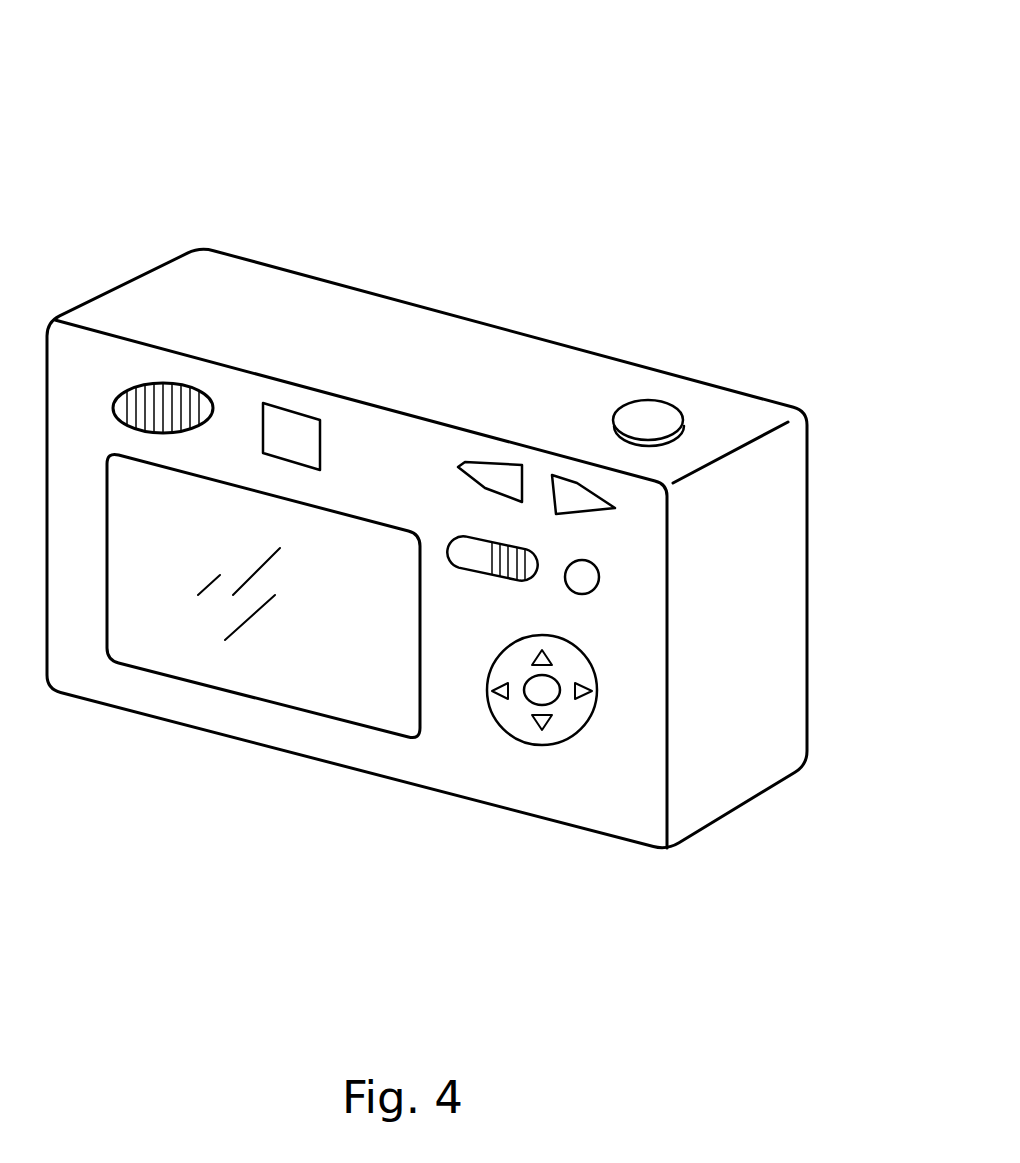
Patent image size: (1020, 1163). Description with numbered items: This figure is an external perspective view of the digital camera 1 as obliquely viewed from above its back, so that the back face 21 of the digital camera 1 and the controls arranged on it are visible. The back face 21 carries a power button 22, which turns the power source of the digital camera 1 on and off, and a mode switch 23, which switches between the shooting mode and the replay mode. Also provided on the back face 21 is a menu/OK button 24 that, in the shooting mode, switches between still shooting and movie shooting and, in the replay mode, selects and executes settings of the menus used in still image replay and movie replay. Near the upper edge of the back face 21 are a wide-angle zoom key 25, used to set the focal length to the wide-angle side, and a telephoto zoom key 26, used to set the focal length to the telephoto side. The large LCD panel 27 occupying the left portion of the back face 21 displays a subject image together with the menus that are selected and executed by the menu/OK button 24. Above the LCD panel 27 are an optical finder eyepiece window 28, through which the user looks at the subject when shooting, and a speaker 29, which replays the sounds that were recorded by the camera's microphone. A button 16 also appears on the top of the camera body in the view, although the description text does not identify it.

The digital camera 1 is at (533, 134).
The shutter release button 16 is at (648, 417).
The back face 21 is at (590, 783).
The power button 22 is at (583, 582).
The mode switch 23 is at (495, 553).
The menu/OK button 24 is at (587, 730).
The wide-angle zoom key 25 is at (487, 458).
The telephoto zoom key 26 is at (603, 497).
The LCD panel 27 is at (307, 673).
The optical finder eyepiece window 28 is at (287, 430).
The speaker 29 is at (182, 408).